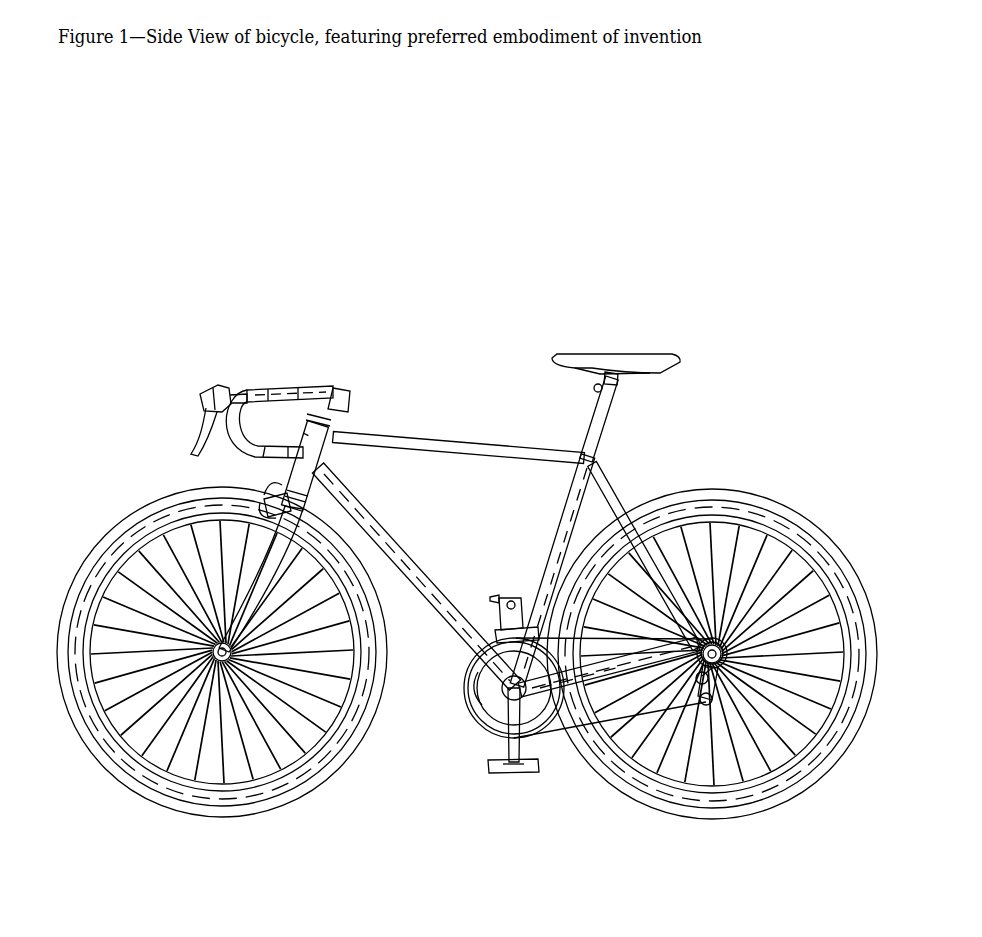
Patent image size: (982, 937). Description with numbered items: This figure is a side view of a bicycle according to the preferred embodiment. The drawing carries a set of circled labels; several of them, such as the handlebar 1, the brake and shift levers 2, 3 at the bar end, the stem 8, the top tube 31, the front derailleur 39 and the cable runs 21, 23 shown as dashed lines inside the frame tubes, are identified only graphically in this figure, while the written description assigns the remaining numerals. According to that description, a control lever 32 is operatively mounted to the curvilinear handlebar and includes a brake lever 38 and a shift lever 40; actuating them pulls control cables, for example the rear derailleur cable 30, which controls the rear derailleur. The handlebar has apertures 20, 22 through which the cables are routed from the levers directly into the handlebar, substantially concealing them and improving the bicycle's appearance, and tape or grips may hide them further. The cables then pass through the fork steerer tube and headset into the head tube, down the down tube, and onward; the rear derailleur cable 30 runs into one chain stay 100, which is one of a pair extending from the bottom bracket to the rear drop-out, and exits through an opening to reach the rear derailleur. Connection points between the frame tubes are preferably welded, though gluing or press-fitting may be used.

The chain stay 100 is at (462, 218).
The handlebar 1 is at (257, 386).
The brake lever 2 is at (180, 392).
The shift lever 3 is at (200, 388).
The stem 8 is at (321, 384).
The rear derailleur cable 30 is at (306, 430).
The top tube 31 is at (474, 448).
The control lever 32 is at (429, 571).
The aperture 20 is at (266, 497).
The cable housing 21 is at (376, 531).
The aperture 22 is at (546, 622).
The cable conduit 23 is at (561, 770).
The brake lever 38 is at (467, 667).
The front derailleur 39 is at (529, 616).
The shift lever 40 is at (638, 668).